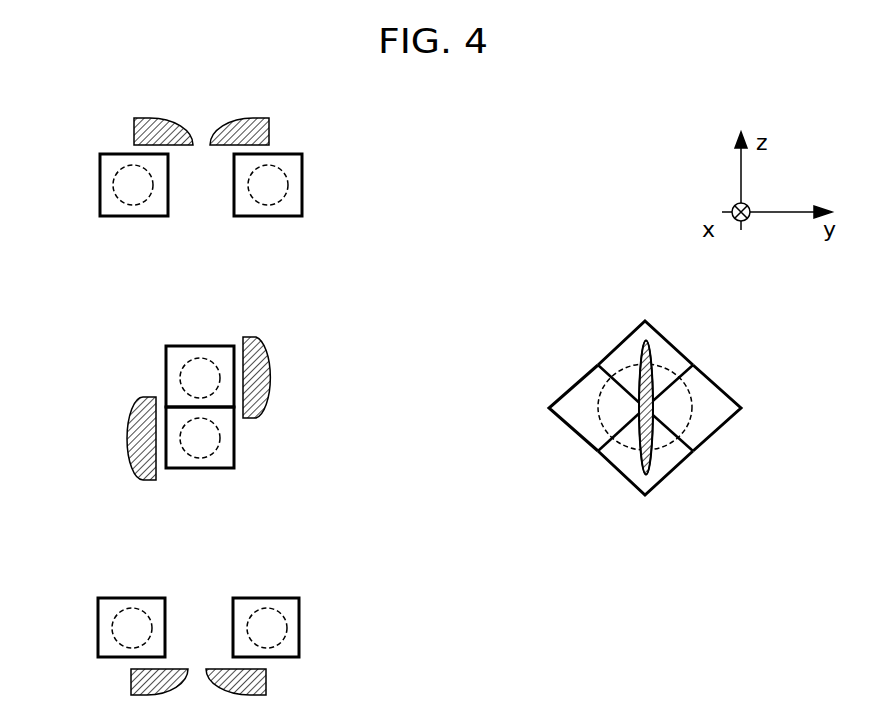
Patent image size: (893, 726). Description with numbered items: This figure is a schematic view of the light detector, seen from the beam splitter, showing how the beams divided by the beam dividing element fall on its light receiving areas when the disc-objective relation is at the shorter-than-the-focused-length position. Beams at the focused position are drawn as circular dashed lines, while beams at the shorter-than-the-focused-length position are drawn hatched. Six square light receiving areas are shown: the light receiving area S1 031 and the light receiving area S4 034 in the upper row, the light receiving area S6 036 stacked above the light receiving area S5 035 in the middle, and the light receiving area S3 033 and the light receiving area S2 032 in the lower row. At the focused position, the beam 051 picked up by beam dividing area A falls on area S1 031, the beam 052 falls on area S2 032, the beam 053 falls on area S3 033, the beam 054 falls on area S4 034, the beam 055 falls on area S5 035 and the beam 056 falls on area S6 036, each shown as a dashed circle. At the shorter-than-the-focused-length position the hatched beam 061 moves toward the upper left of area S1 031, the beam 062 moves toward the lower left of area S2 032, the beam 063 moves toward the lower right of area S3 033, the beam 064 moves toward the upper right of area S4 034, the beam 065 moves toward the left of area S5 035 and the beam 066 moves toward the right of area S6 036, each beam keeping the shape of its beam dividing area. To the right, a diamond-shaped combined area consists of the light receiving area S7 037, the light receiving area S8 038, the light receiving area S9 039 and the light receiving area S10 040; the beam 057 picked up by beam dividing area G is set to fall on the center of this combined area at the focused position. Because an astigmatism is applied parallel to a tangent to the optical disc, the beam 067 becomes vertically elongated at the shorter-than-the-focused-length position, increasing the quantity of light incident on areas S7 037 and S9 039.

The light receiving area S1 031 is at (268, 217).
The light receiving area S2 032 is at (267, 597).
The light receiving area S3 033 is at (132, 597).
The light receiving area S4 034 is at (133, 217).
The light receiving area S5 035 is at (200, 469).
The light receiving area S6 036 is at (200, 345).
The light receiving area S7 037 is at (620, 345).
The light receiving area S8 038 is at (575, 385).
The light receiving area S9 039 is at (670, 473).
The light receiving area S10 040 is at (718, 430).
The beam 051 is at (292, 185).
The beam 052 is at (289, 628).
The beam 053 is at (112, 628).
The beam 054 is at (112, 185).
The beam 055 is at (222, 443).
The beam 056 is at (180, 378).
The beam 057 is at (693, 398).
The beam 061 is at (270, 130).
The beam 062 is at (268, 683).
The beam 063 is at (130, 683).
The beam 064 is at (133, 132).
The beam 065 is at (126, 438).
The beam 066 is at (274, 376).
The beam 067 is at (640, 470).